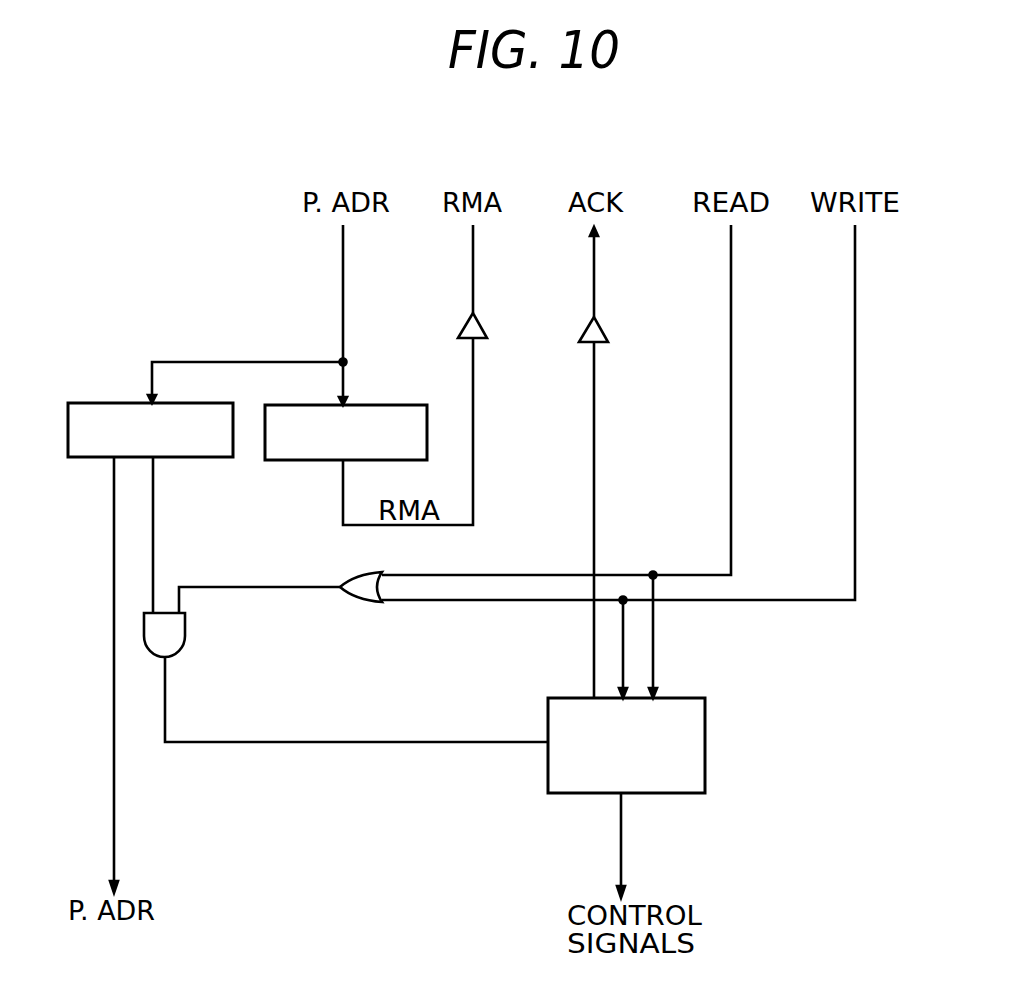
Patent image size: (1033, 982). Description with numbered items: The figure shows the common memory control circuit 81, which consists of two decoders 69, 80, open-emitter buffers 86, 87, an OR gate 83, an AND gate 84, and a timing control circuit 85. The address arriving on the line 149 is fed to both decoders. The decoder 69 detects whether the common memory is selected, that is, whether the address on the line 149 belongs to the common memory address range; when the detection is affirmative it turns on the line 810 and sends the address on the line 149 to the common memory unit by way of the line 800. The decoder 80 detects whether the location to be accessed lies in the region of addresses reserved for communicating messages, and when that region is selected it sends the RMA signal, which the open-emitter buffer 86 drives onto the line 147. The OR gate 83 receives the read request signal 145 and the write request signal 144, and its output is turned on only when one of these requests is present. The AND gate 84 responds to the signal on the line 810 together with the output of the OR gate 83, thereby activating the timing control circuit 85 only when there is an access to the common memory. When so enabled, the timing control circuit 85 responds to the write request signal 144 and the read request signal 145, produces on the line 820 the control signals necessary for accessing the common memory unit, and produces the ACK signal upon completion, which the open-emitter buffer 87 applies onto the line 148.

The common memory control circuit 81 is at (188, 270).
The line 149 is at (344, 279).
The line 147 is at (474, 277).
The open-emitter buffer 86 is at (485, 328).
The line 148 is at (596, 278).
The open-emitter buffer 87 is at (607, 330).
The read request signal 145 is at (732, 279).
The write request signal 144 is at (857, 279).
The decoder 69 is at (181, 403).
The decoder 80 is at (373, 405).
The line 810 is at (154, 571).
The line 800 is at (115, 835).
The AND gate 84 is at (187, 643).
The OR gate 83 is at (352, 603).
The timing control circuit 85 is at (669, 698).
The line 820 is at (622, 857).